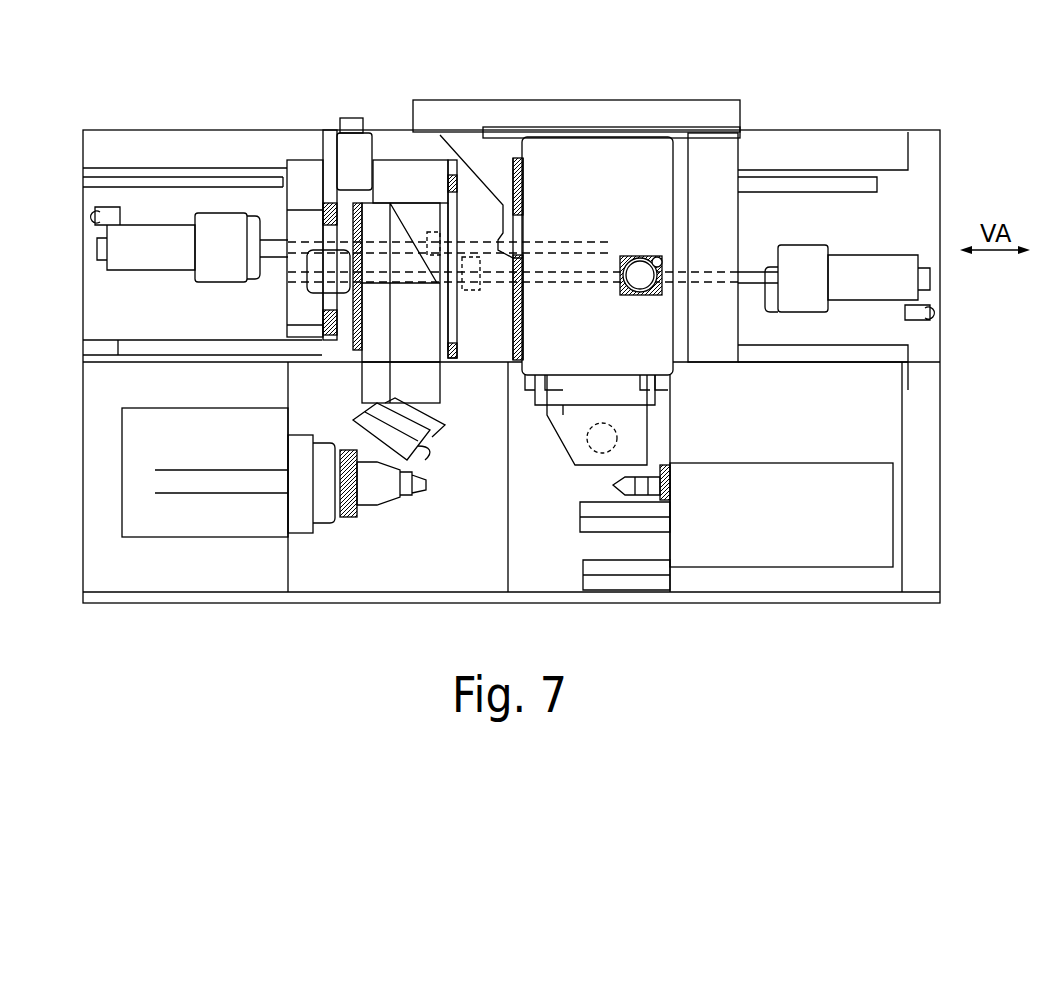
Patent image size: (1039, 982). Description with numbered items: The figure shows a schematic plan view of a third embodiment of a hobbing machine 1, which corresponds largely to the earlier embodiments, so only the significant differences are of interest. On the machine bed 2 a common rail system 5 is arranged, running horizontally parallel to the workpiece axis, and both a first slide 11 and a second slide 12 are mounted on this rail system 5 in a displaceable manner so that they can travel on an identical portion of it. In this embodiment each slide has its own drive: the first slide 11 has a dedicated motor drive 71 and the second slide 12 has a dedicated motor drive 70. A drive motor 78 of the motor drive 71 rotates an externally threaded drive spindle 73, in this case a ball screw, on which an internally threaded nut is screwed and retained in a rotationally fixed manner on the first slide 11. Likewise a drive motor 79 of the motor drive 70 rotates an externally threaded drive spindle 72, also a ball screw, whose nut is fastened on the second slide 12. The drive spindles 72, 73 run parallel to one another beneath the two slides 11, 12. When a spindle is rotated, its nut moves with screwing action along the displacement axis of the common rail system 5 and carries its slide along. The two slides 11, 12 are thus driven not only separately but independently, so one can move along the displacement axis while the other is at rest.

The hobbing machine 1 is at (956, 180).
The machine bed 2 is at (117, 322).
The rail system 5 is at (798, 347).
The first slide 11 is at (593, 178).
The second slide 12 is at (397, 172).
The motor drive 70 is at (212, 243).
The motor drive 71 is at (797, 270).
The drive spindle 72 is at (277, 245).
The drive spindle 73 is at (757, 273).
The drive motor 78 is at (866, 272).
The drive motor 79 is at (155, 238).